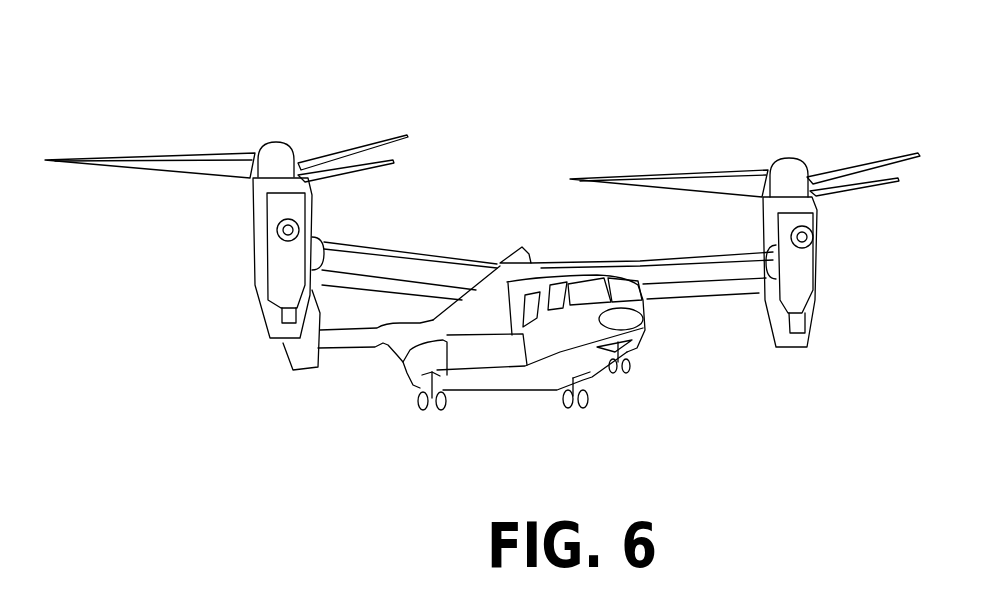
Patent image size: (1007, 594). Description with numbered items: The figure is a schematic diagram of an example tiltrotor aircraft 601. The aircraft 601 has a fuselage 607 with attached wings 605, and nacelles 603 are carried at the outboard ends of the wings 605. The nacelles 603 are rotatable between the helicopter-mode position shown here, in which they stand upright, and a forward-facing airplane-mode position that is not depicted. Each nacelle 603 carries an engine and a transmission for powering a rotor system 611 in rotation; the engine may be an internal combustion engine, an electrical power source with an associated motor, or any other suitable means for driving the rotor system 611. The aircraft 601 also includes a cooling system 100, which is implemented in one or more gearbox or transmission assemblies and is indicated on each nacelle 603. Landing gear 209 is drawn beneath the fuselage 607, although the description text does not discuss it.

The tiltrotor aircraft 601 is at (579, 117).
The nacelles 603 is at (245, 276).
The wings 605 is at (397, 250).
The fuselage 607 is at (646, 332).
The rotor systems 611 is at (405, 136).
The cooling system 100 is at (279, 232).
The landing gear 209 is at (418, 405).